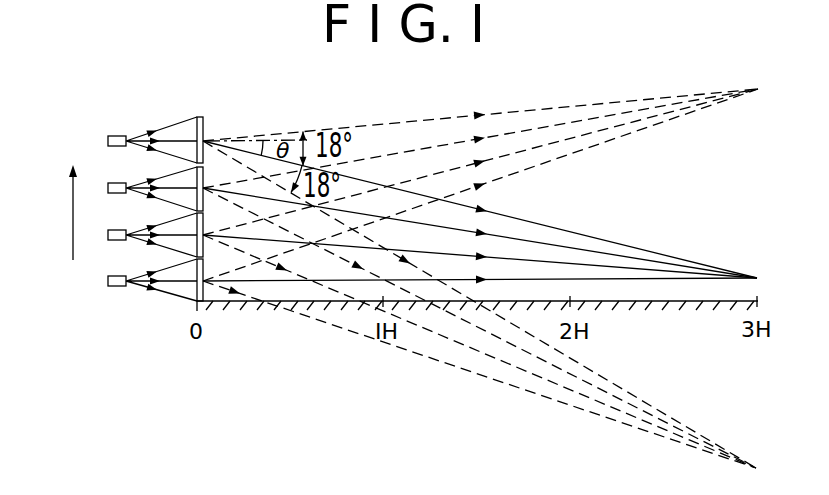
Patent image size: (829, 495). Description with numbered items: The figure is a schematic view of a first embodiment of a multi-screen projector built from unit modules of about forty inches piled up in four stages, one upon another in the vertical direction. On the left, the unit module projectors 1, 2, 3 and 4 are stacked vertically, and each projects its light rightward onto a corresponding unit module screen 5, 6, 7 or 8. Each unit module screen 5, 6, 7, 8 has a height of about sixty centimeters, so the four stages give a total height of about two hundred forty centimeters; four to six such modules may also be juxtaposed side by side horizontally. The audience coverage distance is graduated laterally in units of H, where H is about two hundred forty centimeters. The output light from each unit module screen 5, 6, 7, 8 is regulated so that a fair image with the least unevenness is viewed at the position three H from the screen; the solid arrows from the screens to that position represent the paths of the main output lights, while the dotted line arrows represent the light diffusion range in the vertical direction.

The unit module projector 1 is at (112, 288).
The unit module projector 2 is at (111, 243).
The unit module projector 3 is at (108, 194).
The unit module projector 4 is at (108, 136).
The unit module screen 5 is at (204, 269).
The unit module screen 6 is at (204, 216).
The unit module screen 7 is at (204, 169).
The unit module screen 8 is at (205, 123).